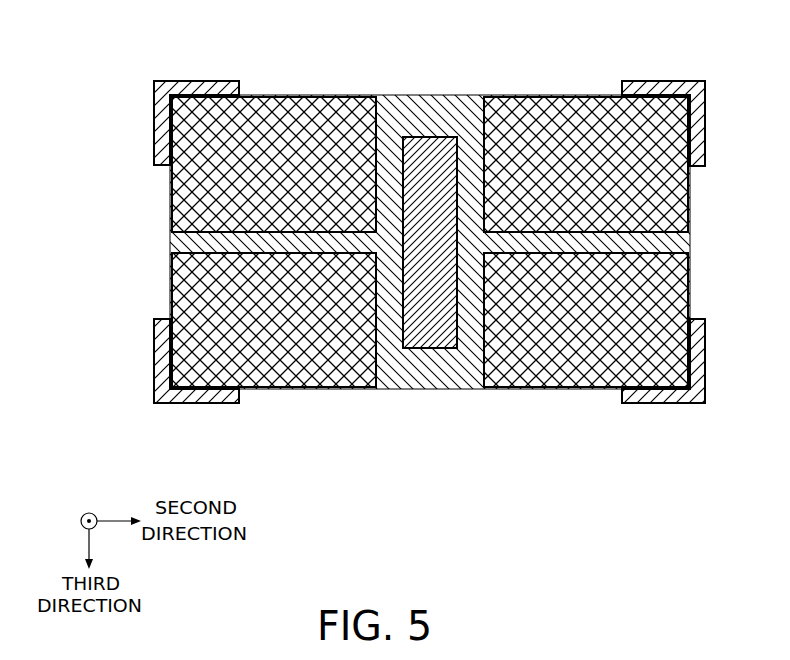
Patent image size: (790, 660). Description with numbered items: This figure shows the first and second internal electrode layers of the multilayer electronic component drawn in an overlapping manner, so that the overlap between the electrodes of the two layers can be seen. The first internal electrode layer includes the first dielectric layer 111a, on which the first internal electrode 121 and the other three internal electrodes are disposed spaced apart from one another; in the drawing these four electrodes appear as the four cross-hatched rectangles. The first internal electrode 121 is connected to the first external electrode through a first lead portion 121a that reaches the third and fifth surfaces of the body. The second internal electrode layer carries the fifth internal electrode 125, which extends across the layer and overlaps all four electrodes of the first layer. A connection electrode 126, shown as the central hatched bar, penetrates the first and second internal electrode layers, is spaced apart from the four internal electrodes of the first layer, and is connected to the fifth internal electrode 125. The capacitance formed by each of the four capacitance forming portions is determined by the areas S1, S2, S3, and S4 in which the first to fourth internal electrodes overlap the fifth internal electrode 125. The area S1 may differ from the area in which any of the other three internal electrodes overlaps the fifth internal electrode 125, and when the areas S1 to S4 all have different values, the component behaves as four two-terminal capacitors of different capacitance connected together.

The first lead portion 121a is at (200, 80).
The first internal electrode 121 is at (430, 244).
The area S1 is at (327, 93).
The area S2 is at (533, 93).
The area S3 is at (325, 389).
The area S4 is at (532, 389).
The first dielectric layer 111a is at (585, 93).
The fifth internal electrode 125 is at (405, 388).
The connection electrode 126 is at (438, 337).